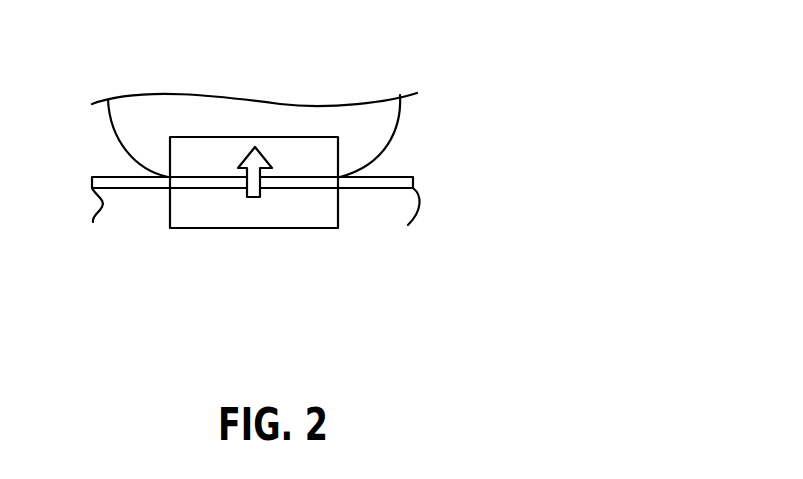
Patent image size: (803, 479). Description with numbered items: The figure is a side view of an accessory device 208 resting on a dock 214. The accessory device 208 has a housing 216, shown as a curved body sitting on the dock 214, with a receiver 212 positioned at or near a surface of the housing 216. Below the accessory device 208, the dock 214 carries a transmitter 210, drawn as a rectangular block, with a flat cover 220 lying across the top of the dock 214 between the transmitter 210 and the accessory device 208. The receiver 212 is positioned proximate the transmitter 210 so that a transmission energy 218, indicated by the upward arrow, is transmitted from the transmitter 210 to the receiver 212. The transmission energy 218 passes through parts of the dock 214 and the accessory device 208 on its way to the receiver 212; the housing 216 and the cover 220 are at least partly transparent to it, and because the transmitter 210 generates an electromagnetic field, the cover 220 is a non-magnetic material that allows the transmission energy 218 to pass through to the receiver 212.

The accessory device 208 is at (422, 119).
The housing 216 is at (393, 143).
The receiver 212 is at (305, 152).
The cover 220 is at (412, 177).
The dock 214 is at (442, 220).
The transmitter 210 is at (323, 212).
The transmission energy 218 is at (253, 185).